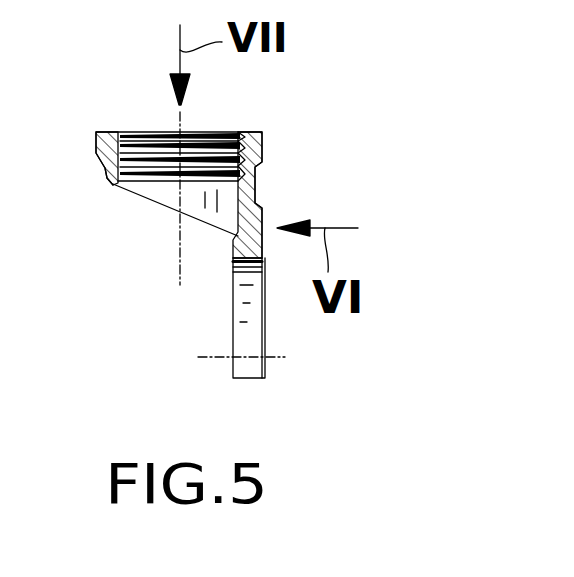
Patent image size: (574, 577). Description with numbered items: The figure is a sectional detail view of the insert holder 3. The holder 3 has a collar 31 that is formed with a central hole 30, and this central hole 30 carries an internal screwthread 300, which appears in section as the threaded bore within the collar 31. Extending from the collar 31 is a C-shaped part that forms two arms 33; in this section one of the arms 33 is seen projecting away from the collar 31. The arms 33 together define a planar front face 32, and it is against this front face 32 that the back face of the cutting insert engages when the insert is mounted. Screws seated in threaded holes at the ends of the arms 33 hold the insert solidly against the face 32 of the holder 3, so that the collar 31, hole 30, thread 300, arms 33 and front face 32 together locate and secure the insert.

The holder 3 is at (296, 170).
The central hole 30 is at (105, 158).
The collar 31 is at (262, 147).
The internal screwthread 300 is at (163, 153).
The planar front face 32 is at (265, 337).
The arms 33 is at (233, 322).